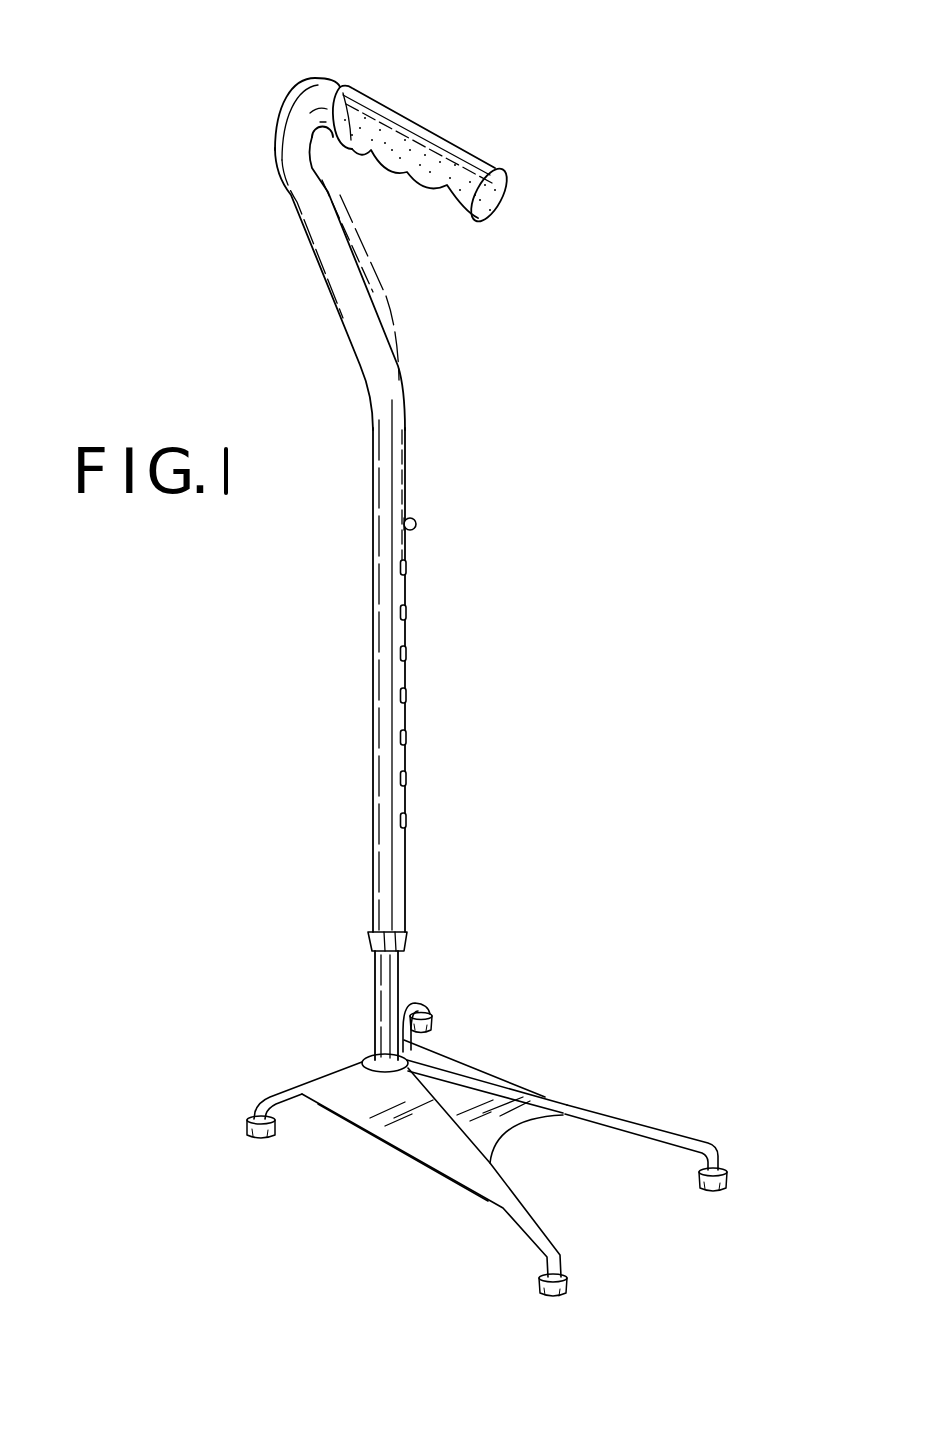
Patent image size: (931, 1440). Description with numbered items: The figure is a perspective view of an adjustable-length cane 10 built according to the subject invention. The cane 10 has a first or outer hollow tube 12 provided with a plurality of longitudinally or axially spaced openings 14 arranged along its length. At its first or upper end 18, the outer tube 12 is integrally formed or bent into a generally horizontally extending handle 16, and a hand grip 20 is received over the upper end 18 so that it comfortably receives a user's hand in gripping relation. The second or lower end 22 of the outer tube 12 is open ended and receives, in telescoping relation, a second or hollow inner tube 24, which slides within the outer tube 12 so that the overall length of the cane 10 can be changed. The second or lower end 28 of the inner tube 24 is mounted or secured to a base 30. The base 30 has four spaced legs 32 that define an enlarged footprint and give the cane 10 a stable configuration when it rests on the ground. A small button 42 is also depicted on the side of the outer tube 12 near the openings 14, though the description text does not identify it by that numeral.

The adjustable-length cane 10 is at (232, 225).
The first or outer hollow tube 12 is at (371, 591).
The longitudinally or axially spaced openings 14 is at (406, 612).
The generally horizontally extending handle 16 is at (318, 82).
The first or upper end 18 is at (333, 295).
The hand grip 20 is at (450, 147).
The second or lower end 22 is at (380, 921).
The second or hollow inner tube 24 is at (380, 980).
The second or lower end 28 is at (381, 1056).
The base 30 is at (545, 1080).
The legs 32 is at (258, 1102).
The push button 42 is at (415, 521).